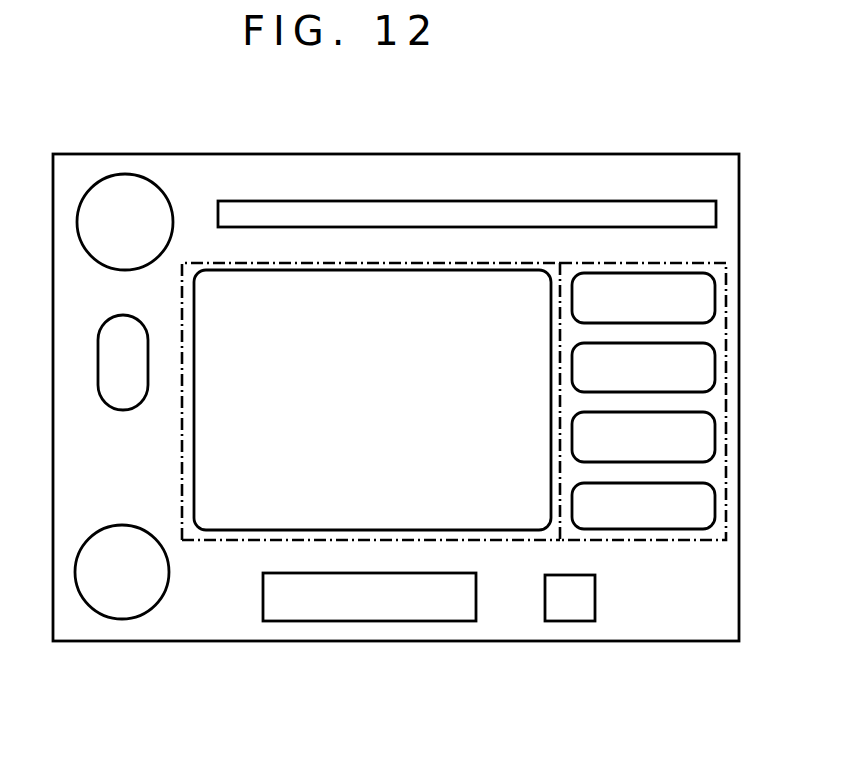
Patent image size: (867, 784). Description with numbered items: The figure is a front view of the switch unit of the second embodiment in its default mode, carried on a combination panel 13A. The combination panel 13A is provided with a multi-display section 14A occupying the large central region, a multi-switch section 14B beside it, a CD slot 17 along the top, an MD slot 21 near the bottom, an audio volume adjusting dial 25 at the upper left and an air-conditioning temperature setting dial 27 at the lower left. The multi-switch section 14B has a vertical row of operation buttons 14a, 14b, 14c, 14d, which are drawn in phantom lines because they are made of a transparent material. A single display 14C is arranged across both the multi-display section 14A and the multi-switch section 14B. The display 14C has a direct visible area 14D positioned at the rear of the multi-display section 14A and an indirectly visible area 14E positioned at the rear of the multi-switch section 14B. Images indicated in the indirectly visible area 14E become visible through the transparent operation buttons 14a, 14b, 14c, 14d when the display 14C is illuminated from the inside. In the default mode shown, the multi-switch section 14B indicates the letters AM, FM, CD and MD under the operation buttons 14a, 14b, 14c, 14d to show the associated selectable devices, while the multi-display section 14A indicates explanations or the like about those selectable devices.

The combination panel 13A is at (167, 642).
The audio volume adjusting dial 25 is at (137, 197).
The air-conditioning temperature setting dial 27 is at (131, 593).
The CD slot 17 is at (350, 207).
The MD slot 21 is at (356, 603).
The multi-display section 14A is at (499, 527).
The multi-switch section 14B is at (650, 540).
The display 14C is at (476, 264).
The direct visible area 14D is at (290, 258).
The indirectly visible area 14E is at (650, 262).
The operation button 14a is at (598, 292).
The operation button 14b is at (693, 357).
The operation button 14c is at (693, 448).
The operation button 14d is at (615, 520).